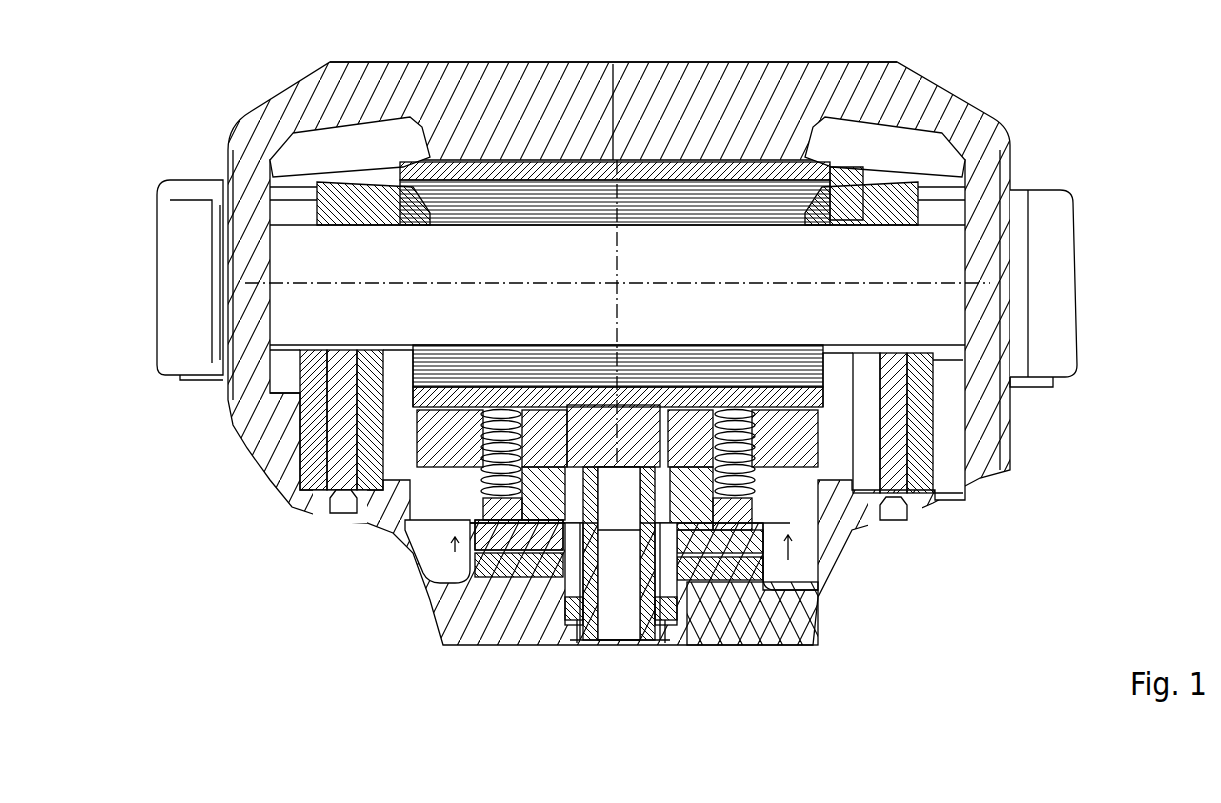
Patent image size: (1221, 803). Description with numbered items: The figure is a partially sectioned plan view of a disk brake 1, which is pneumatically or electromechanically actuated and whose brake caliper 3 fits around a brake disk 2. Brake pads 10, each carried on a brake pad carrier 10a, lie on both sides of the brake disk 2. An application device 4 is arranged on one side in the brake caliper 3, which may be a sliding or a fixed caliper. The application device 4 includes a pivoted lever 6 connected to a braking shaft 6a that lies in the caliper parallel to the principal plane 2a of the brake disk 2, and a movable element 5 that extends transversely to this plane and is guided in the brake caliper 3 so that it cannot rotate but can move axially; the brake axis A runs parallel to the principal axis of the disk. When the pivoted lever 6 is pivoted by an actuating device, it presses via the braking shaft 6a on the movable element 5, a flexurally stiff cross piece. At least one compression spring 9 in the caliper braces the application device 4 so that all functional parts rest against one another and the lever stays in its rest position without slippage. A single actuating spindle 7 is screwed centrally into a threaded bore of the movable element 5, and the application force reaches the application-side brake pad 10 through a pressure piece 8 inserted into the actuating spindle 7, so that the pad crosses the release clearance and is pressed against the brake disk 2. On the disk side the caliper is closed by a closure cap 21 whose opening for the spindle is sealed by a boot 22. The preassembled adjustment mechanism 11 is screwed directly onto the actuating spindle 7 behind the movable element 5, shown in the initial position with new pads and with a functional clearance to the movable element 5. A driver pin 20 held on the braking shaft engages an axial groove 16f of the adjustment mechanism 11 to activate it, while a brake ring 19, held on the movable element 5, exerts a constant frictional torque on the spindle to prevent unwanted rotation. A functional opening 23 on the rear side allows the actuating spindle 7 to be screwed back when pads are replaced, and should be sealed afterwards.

The disk brake 1 is at (977, 55).
The brake disk 2 is at (885, 258).
The principal plane of the brake disk 2a is at (912, 272).
The brake caliper 3 is at (678, 90).
The application device 4 is at (910, 418).
The movable element 5 is at (805, 470).
The pivoted lever 6 is at (790, 525).
The braking shaft 6a is at (473, 590).
The actuating spindle 7 is at (668, 645).
The pressure piece 8 is at (620, 640).
The compression spring 9 is at (760, 415).
The brake pad 10 is at (523, 372).
The brake pad carrier 10a is at (436, 388).
The adjustment mechanism 11 is at (675, 607).
The brake ring 19 is at (717, 563).
The driver pin 20 is at (560, 573).
The axial groove 16f is at (519, 535).
The closure cap 21 is at (600, 418).
The boot 22 is at (735, 405).
The functional opening 23 is at (612, 648).
The brake axis A is at (620, 617).